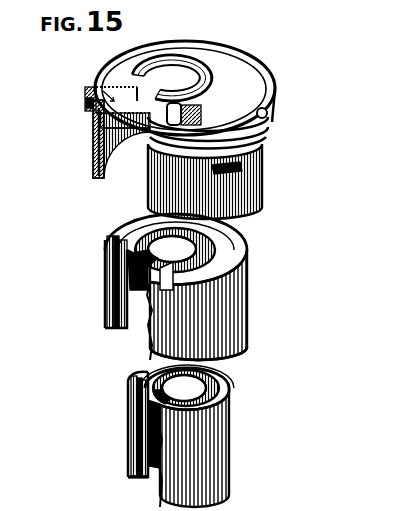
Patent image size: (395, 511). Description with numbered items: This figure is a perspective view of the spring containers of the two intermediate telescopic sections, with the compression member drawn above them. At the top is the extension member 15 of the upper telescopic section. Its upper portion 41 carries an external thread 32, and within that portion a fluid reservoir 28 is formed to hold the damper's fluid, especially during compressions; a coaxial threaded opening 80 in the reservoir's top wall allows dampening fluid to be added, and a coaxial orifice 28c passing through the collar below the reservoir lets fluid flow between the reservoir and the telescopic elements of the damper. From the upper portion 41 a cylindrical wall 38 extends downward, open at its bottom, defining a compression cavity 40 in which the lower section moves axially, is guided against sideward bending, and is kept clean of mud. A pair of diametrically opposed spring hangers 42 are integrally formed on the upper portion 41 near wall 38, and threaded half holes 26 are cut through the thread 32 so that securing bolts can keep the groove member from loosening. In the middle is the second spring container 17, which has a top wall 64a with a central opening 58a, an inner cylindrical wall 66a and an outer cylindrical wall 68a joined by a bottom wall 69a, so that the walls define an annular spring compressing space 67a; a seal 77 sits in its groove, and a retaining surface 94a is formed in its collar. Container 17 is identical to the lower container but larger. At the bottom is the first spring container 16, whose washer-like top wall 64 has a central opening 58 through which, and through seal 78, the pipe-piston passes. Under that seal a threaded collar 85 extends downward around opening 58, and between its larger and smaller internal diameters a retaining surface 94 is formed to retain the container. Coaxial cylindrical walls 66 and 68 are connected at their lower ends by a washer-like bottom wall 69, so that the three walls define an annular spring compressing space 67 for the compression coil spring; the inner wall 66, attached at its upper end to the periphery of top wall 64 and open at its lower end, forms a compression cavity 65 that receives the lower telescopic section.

The upper portion 41 is at (223, 62).
The threaded opening 80 is at (212, 73).
The fluid reservoir 28 is at (95, 88).
The orifice 28c is at (170, 110).
The external thread 32 is at (90, 103).
The extension member 15 is at (96, 127).
The cylindrical wall 38 is at (99, 158).
The compression cavity 40 is at (136, 146).
The threaded half holes 26 is at (259, 128).
The spring hangers 42 is at (250, 176).
The top wall 64a is at (100, 266).
The compression cavity 65 is at (130, 403).
The inner cylindrical wall 66a is at (89, 282).
The second spring container 17 is at (171, 340).
The annular spring compressing space 67a is at (96, 284).
The outer cylindrical wall 68a is at (94, 295).
The bottom wall 69a is at (130, 304).
The seal 77 is at (203, 245).
The central opening 58a is at (198, 249).
The retaining surface 94a is at (168, 266).
The retaining surface 94 is at (233, 360).
The top wall 64 is at (134, 375).
The inner cylindrical wall 66 is at (128, 418).
The spring container 16 is at (170, 436).
The annular spring compressing space 67 is at (130, 438).
The outer cylindrical wall 68 is at (130, 450).
The bottom wall 69 is at (134, 479).
The seal 78 is at (222, 393).
The central opening 58 is at (228, 402).
The threaded collar 85 is at (172, 420).